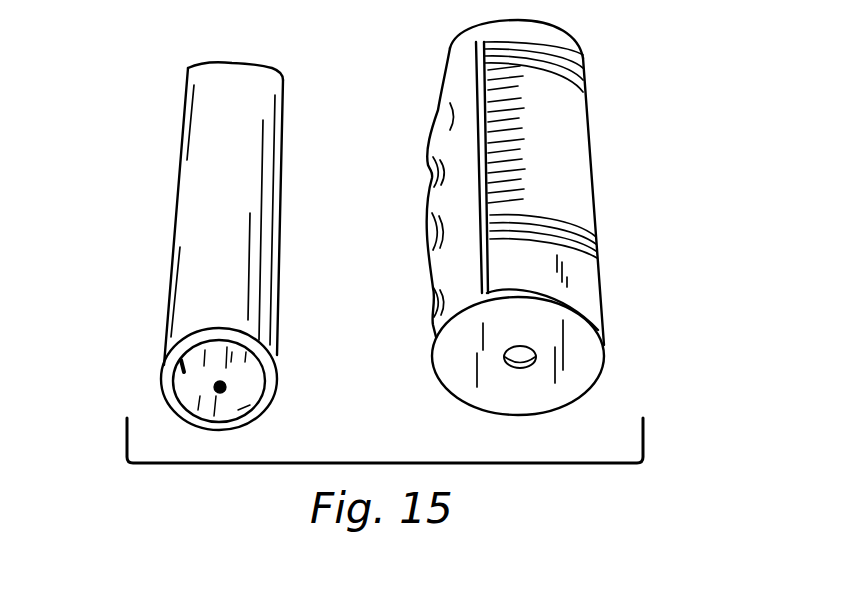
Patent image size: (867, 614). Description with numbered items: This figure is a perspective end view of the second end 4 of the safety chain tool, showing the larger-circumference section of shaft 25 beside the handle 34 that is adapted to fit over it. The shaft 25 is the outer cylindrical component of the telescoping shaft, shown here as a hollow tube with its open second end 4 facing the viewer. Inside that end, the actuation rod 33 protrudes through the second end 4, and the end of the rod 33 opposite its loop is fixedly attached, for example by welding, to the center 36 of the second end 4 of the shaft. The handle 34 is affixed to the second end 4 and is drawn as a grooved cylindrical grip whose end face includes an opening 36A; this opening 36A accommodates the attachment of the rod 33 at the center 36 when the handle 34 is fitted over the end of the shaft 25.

The second end 4 is at (170, 388).
The larger-circumference section of shaft 25 is at (198, 193).
The actuation rod 33 is at (230, 368).
The handle 34 is at (580, 152).
The center 36 is at (226, 390).
The opening 36A is at (540, 361).